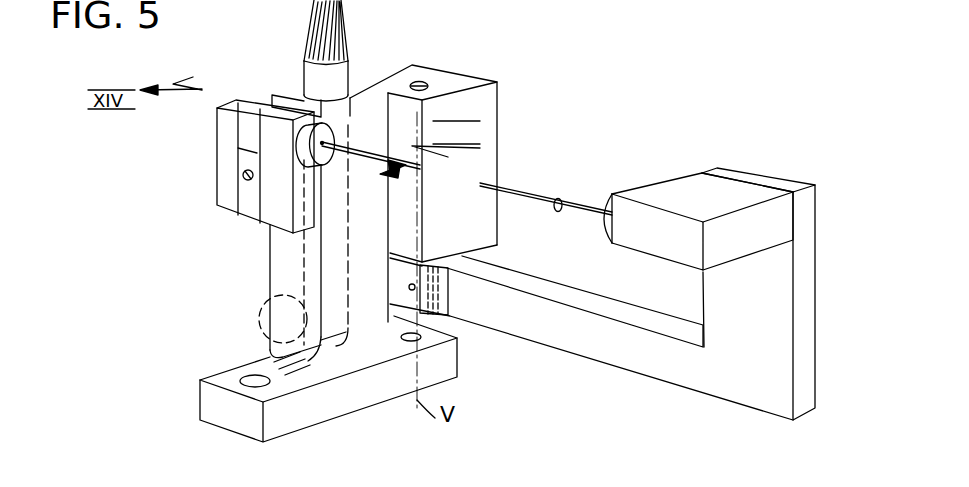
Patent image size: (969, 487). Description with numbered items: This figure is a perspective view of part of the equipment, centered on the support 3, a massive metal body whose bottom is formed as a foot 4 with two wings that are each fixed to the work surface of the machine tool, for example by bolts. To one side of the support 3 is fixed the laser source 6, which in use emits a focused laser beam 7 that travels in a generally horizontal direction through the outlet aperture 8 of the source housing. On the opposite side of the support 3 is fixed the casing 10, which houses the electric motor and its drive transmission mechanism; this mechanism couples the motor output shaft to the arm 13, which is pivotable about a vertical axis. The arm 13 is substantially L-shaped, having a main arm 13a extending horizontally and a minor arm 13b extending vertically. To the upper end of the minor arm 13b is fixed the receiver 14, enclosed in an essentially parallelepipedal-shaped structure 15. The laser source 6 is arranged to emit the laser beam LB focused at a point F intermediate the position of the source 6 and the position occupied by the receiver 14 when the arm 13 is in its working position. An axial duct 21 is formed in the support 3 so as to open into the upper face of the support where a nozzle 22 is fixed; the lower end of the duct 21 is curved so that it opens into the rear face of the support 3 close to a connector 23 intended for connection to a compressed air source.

The support 3 is at (375, 228).
The foot 4 is at (352, 408).
The laser source 6 is at (203, 174).
The focused laser beam 7 is at (364, 152).
The outlet aperture 8 is at (324, 141).
The casing 10 is at (485, 115).
The arm 13 is at (636, 302).
The main arm 13a is at (525, 330).
The minor arm 13b is at (770, 284).
The receiver 14 is at (698, 164).
The parallelepipedal-shaped structure 15 is at (747, 162).
The axial duct 21 is at (347, 318).
The nozzle 22 is at (312, 70).
The connector 23 is at (260, 320).
The focal point F is at (477, 183).
The laser beam LB is at (561, 199).